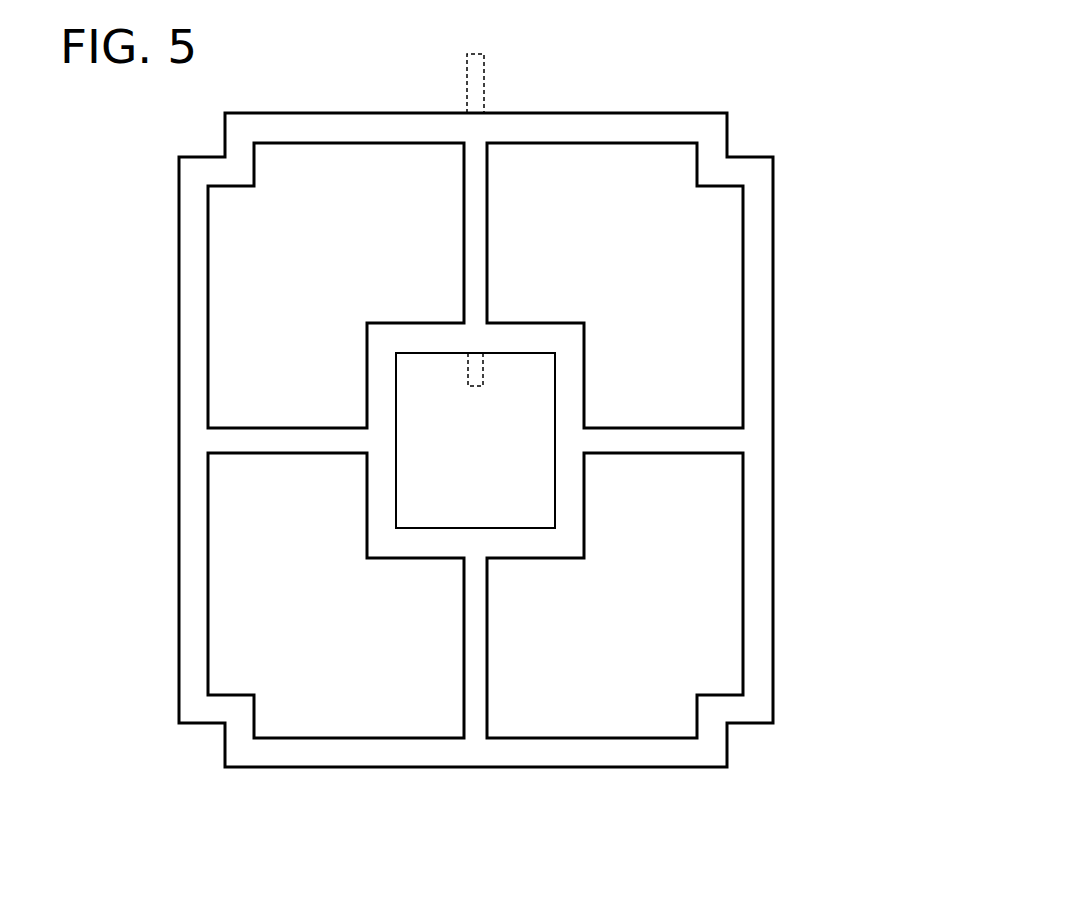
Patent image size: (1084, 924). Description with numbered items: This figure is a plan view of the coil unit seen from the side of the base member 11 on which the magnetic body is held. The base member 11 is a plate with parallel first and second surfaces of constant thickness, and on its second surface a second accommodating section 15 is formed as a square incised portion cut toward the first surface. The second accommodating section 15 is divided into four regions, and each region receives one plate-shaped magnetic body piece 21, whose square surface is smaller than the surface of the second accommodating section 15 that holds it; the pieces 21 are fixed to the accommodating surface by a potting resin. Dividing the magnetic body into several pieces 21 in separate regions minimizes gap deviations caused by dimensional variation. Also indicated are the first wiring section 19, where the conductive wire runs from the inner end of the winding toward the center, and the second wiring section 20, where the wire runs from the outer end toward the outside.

The base member 11 is at (760, 173).
The second accommodating section 15 is at (507, 196).
The first wiring section 19 is at (468, 370).
The second wiring section 20 is at (484, 76).
The magnetic body piece 21 is at (288, 290).